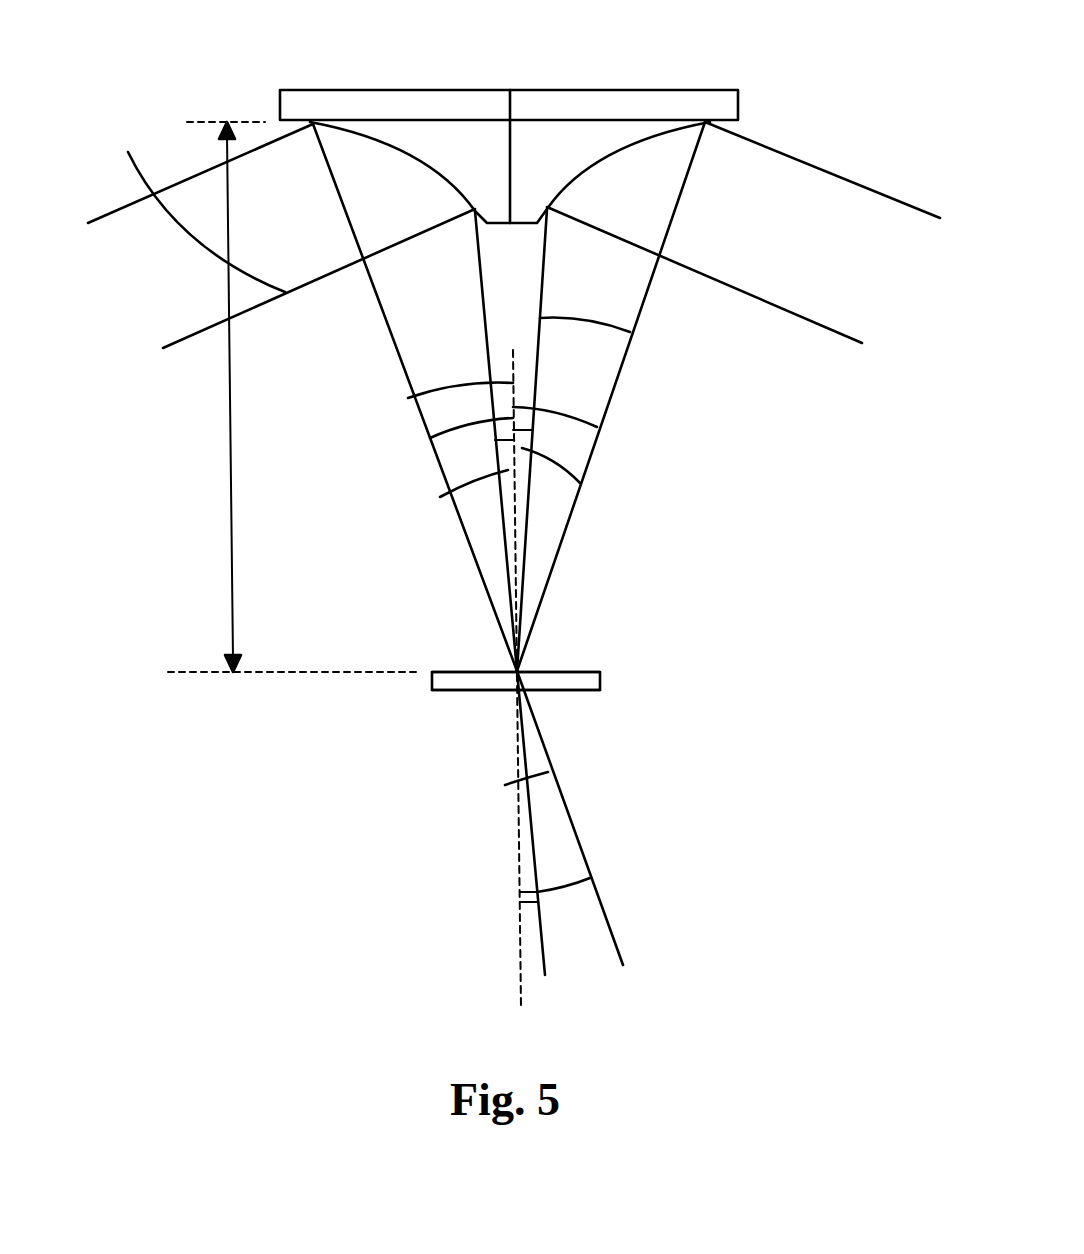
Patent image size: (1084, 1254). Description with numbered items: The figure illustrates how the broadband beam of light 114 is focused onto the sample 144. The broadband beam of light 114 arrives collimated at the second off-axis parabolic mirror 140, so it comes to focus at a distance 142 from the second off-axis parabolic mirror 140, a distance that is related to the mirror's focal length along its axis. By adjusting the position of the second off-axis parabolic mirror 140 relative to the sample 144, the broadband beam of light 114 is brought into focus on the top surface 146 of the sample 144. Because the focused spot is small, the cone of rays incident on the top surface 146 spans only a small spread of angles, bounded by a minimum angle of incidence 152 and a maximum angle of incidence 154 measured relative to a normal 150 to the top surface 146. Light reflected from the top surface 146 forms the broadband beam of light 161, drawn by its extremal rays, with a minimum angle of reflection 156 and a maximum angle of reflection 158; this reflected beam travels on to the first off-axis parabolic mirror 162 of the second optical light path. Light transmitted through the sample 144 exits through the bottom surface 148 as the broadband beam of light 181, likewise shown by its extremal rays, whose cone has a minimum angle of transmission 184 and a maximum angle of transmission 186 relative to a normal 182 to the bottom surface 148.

The second off-axis parabolic mirror 140 is at (347, 89).
The first off-axis parabolic mirror 162 is at (655, 89).
The broadband beam of light 114 is at (190, 178).
The distance 142 is at (228, 422).
The normal 150 is at (408, 398).
The maximum angle of incidence 154 is at (468, 455).
The minimum angle of incidence 152 is at (440, 497).
The maximum angle of reflection 158 is at (560, 433).
The minimum angle of reflection 156 is at (580, 483).
The broadband beam of light 161 is at (630, 332).
The normal 182 is at (518, 935).
The sample 144 is at (430, 682).
The top surface 146 is at (585, 670).
The bottom surface 148 is at (583, 690).
The minimum angle of transmission 184 is at (525, 872).
The maximum angle of transmission 186 is at (542, 838).
The broadband beam of light 181 is at (505, 785).